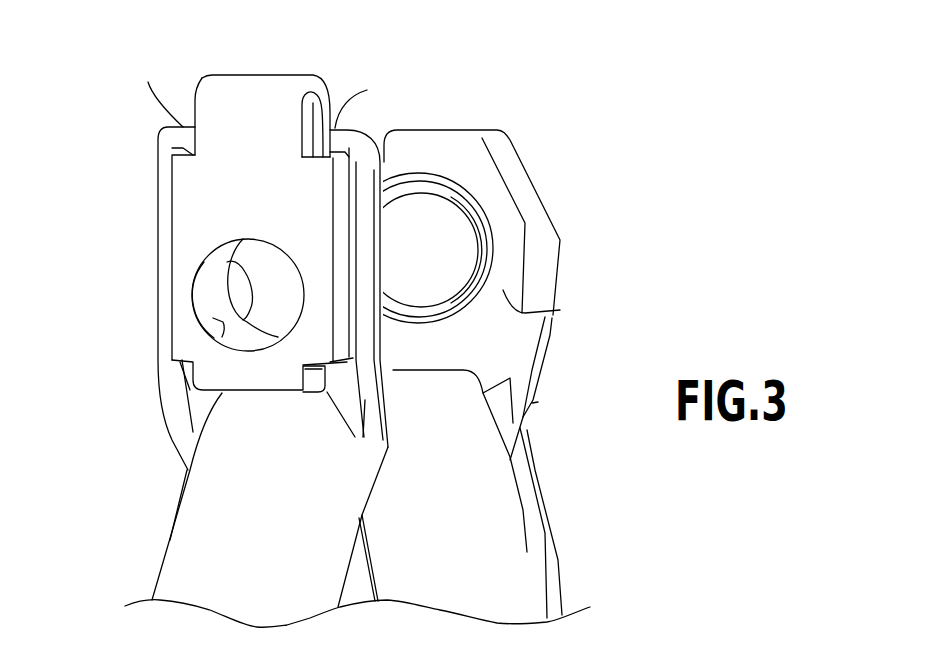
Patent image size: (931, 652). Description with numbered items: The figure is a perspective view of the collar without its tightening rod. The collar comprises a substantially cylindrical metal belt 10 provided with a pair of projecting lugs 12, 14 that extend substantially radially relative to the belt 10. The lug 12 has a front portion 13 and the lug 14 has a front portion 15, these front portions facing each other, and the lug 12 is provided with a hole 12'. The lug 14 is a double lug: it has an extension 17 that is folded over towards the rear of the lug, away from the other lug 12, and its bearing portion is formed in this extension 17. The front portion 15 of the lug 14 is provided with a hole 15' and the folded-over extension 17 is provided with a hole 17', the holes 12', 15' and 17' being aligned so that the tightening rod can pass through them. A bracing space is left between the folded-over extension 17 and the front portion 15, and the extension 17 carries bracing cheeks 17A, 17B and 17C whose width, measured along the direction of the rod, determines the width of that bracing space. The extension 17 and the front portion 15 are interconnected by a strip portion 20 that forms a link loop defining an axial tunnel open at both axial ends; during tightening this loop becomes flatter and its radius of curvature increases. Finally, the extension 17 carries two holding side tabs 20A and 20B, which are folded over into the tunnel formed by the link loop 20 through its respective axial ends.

The metal belt 10 is at (543, 535).
The lug 12 is at (489, 274).
The hole 12' is at (439, 197).
The front portion 13 is at (555, 310).
The lug 14 is at (338, 65).
The front portion 15 is at (429, 205).
The hole 15' is at (170, 285).
The extension 17 is at (267, 297).
The bracing cheek 17A is at (340, 318).
The bracing cheek 17B is at (170, 180).
The bracing cheek 17C is at (253, 385).
The hole 17' is at (160, 342).
The strip portion 20 is at (265, 87).
The holding side tab 20A is at (330, 95).
The holding side tab 20B is at (193, 95).